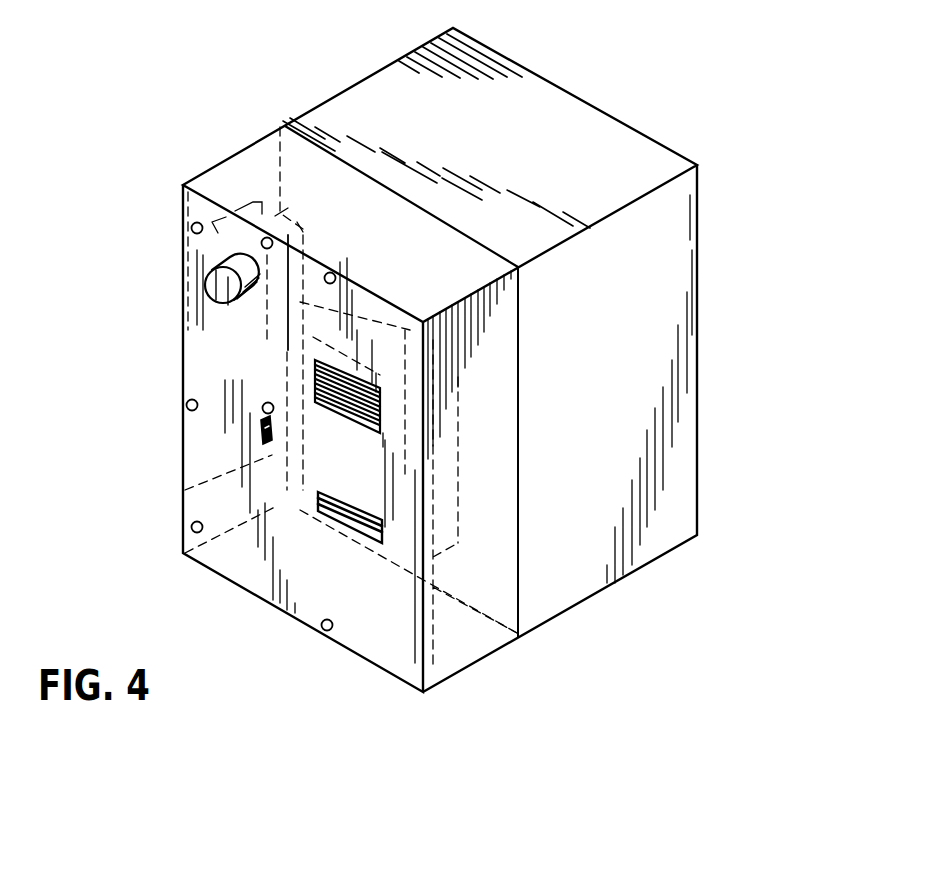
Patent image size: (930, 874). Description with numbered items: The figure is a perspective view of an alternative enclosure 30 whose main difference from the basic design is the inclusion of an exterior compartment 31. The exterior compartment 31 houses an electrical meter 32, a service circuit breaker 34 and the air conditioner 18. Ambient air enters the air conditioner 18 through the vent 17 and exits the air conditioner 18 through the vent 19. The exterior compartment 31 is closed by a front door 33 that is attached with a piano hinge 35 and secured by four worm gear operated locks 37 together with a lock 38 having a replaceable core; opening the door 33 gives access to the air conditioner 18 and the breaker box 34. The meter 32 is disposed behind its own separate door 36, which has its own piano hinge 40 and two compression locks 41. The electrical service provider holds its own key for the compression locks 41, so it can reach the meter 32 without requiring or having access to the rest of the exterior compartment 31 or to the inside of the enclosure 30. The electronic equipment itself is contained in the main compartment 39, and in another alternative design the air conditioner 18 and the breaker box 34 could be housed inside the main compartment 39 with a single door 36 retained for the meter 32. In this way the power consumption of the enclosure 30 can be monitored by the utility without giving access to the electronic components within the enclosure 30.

The enclosure 30 is at (613, 87).
The exterior compartment 31 is at (374, 618).
The electrical meter 32 is at (220, 293).
The front door 33 is at (210, 502).
The service circuit breaker 34 is at (185, 490).
The piano hinge 35 is at (440, 517).
The door 36 is at (187, 352).
The worm gear operated locks 37 is at (191, 229).
The lock 38 is at (262, 418).
The main compartment 39 is at (596, 438).
The piano hinge 40 is at (185, 270).
The compression locks 41 is at (262, 244).
The vent 17 is at (363, 398).
The air conditioner 18 is at (300, 508).
The vent 19 is at (330, 520).